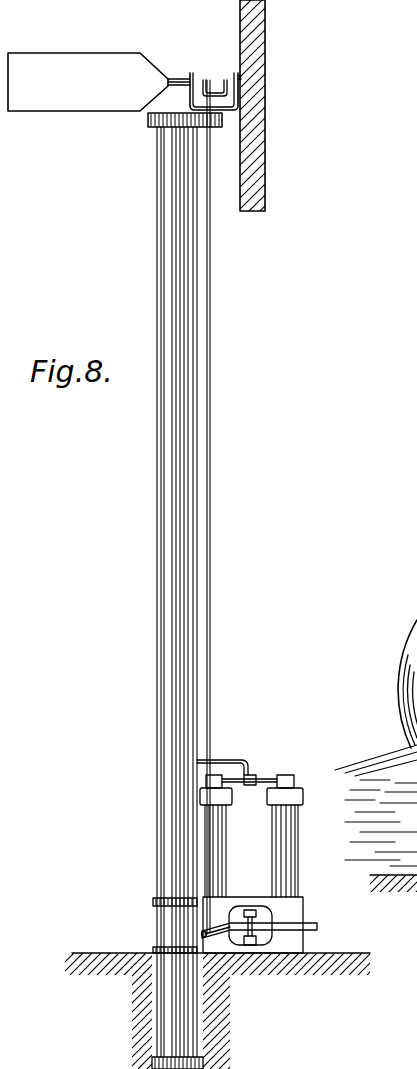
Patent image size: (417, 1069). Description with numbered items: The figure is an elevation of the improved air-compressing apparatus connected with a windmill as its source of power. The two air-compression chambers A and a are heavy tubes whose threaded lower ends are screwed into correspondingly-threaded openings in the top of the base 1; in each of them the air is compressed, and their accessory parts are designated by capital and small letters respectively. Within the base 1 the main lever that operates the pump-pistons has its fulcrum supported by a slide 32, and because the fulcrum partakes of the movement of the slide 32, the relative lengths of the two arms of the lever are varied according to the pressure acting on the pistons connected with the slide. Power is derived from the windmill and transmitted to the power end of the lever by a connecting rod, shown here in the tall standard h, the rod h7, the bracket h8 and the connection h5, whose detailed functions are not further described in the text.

The standpipe pole h is at (158, 722).
The operating rod h7 is at (212, 548).
The wall bracket h8 is at (207, 76).
The air-compression chamber a is at (225, 862).
The air-compression chamber A is at (300, 850).
The base 1 is at (253, 926).
The slide 32 is at (312, 919).
The rod pivot h5 is at (213, 936).